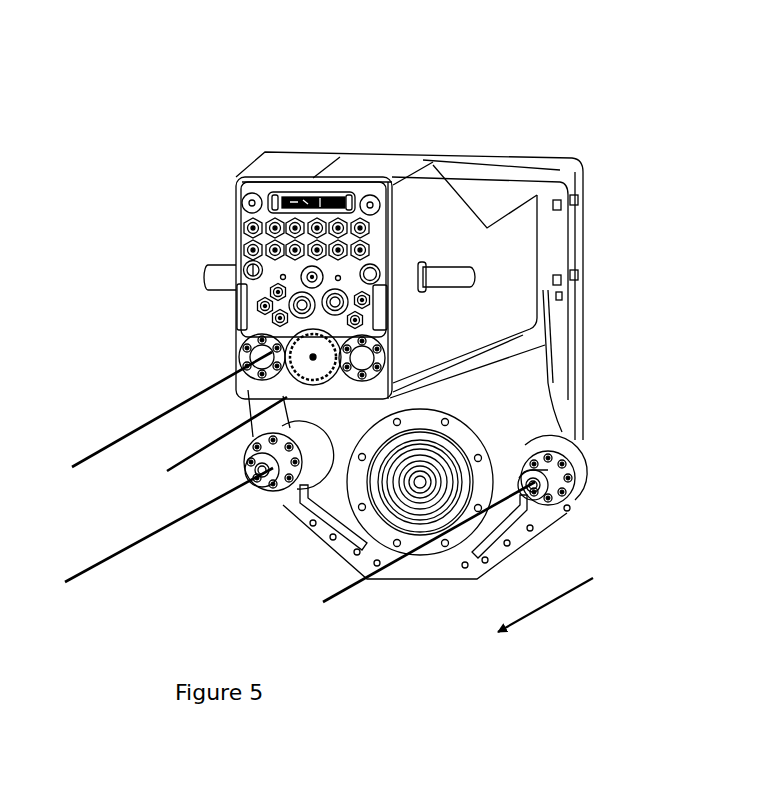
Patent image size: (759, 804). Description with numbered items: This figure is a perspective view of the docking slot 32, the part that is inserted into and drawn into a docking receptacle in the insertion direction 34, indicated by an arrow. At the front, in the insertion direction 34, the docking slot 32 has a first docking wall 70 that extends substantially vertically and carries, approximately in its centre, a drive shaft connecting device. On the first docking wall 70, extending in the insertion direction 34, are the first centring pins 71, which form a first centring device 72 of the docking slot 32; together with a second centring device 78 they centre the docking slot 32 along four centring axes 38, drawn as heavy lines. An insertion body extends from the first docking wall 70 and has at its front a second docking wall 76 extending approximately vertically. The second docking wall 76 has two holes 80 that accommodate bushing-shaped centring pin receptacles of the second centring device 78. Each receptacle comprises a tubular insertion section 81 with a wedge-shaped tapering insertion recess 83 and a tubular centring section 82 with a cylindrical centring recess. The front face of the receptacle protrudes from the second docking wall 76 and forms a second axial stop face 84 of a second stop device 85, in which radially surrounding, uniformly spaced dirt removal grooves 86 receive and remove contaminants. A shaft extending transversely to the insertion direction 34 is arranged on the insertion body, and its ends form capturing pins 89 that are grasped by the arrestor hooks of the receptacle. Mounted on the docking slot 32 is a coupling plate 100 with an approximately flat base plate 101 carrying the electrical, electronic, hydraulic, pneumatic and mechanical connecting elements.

The docking slot 32 is at (237, 98).
The insertion direction 34 is at (545, 605).
The centring axes 38 is at (210, 444).
The first docking wall 70 is at (497, 393).
The first centring pins 71 is at (254, 462).
The first centring device 72 is at (565, 495).
The second docking wall 76 is at (380, 347).
The second centring device 78 is at (575, 469).
The holes 80 is at (166, 294).
The insertion section 81 is at (262, 340).
The centring section 82 is at (277, 348).
The insertion recess 83 is at (277, 366).
The second axial stop face 84 is at (262, 374).
The second stop device 85 is at (247, 366).
The dirt removal grooves 86 is at (252, 348).
The capturing pins 89 is at (457, 277).
The coupling plate 100 is at (353, 190).
The base plate 101 is at (236, 230).